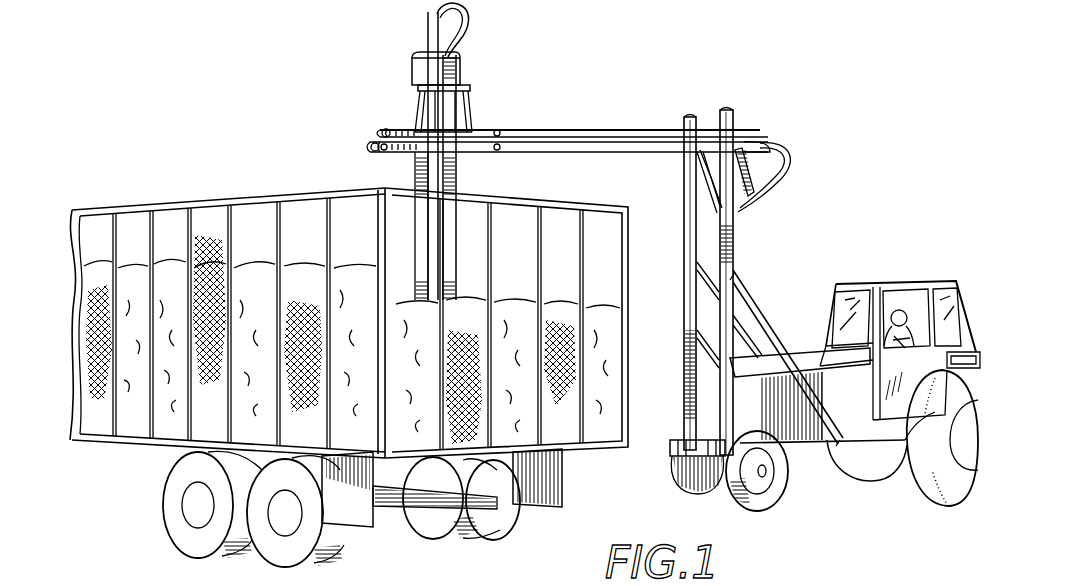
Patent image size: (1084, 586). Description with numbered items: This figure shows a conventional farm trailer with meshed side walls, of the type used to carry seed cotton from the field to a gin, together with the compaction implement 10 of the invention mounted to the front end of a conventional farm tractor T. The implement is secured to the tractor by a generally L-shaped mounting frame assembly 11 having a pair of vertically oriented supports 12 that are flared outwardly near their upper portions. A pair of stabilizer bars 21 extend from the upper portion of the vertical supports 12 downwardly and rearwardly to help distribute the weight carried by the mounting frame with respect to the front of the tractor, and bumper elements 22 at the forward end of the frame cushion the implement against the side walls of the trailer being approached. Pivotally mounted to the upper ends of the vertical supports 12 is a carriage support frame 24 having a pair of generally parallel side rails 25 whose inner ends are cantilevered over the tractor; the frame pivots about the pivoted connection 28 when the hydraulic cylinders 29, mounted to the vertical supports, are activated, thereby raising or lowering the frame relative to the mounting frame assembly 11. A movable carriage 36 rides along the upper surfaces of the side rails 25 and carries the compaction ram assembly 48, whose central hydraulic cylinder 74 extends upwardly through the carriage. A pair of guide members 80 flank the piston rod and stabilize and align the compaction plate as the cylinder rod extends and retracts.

The compaction implement 10 is at (577, 70).
The mounting frame assembly 11 is at (708, 248).
The vertical supports 12 is at (685, 120).
The stabilizer bars 21 is at (762, 302).
The bumper elements 22 is at (688, 450).
The carriage support frame 24 is at (598, 134).
The side rails 25 is at (604, 150).
The pivoted connection 28 is at (735, 142).
The hydraulic cylinders 29 is at (760, 190).
The movable carriage 36 is at (476, 99).
The compaction ram assembly 48 is at (405, 66).
The central hydraulic cylinder 74 is at (433, 33).
The guide members 80 is at (452, 174).
The farm tractor T is at (886, 283).